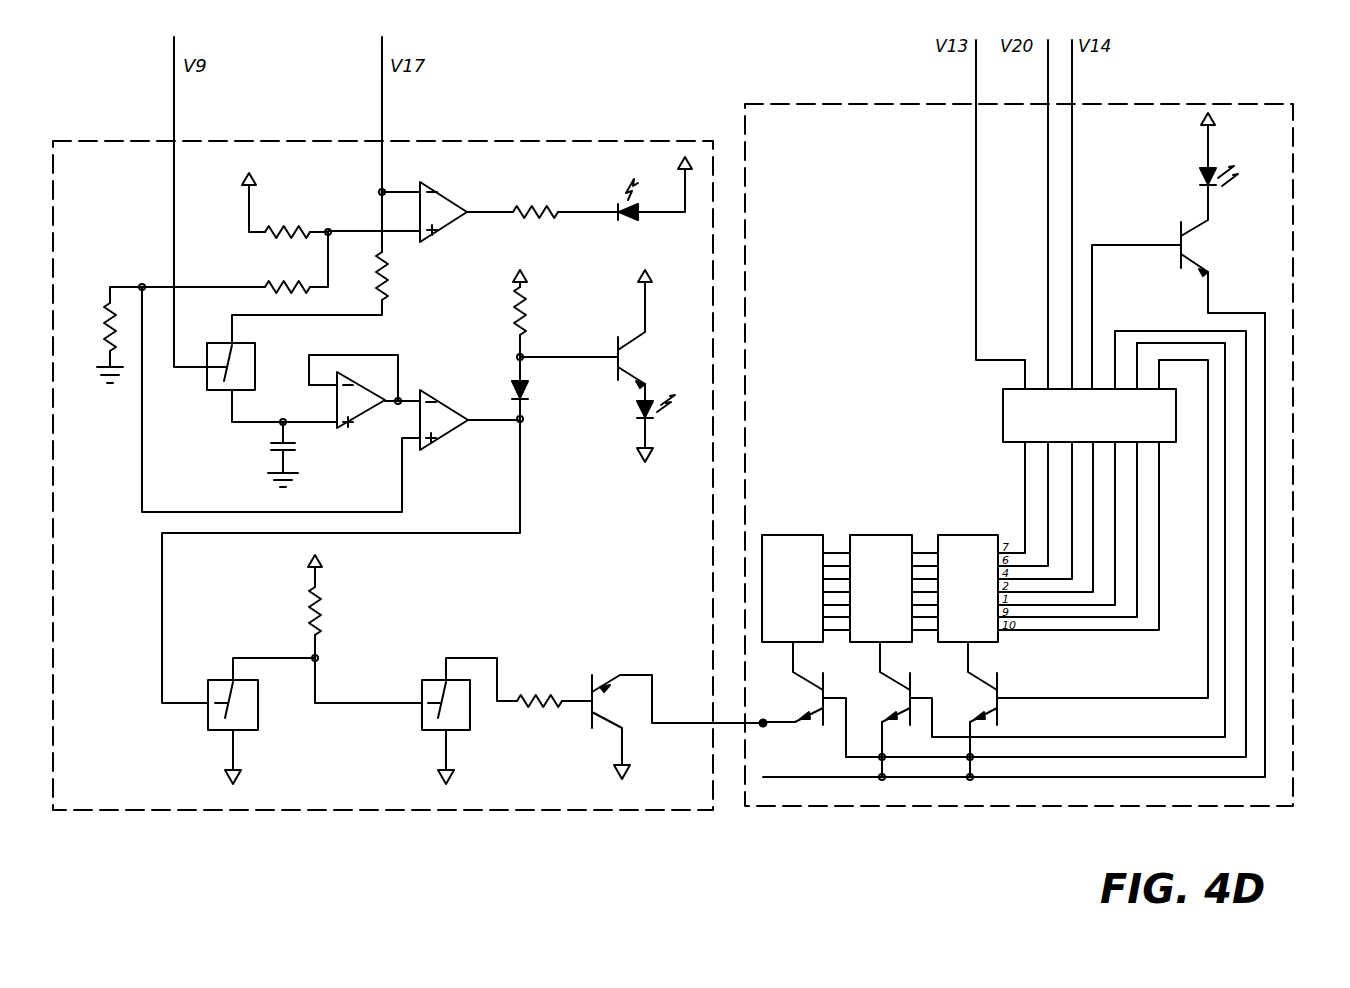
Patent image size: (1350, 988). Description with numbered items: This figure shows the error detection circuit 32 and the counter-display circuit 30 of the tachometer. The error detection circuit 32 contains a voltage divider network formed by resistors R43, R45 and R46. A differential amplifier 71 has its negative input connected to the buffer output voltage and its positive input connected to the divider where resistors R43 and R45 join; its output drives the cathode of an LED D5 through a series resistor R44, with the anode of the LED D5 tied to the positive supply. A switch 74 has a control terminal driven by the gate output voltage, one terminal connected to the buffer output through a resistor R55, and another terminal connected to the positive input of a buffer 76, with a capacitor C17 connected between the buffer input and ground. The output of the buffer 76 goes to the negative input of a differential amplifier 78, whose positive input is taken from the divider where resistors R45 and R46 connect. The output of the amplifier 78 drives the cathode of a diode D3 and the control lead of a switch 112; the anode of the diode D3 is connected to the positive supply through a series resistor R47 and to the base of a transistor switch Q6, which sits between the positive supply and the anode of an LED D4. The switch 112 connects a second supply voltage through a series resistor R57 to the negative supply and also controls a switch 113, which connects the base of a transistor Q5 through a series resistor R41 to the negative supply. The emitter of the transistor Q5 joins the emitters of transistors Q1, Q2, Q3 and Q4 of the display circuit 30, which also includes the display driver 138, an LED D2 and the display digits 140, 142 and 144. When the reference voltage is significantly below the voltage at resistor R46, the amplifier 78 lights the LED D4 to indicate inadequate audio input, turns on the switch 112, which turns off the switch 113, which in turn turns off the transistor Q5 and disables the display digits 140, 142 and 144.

The error detection circuit 32 is at (521, 141).
The counter-display circuit 30 is at (1295, 646).
The differential amplifier 71 is at (443, 188).
The switch 74 is at (214, 393).
The buffer 76 is at (357, 429).
The differential amplifier 78 is at (466, 379).
The switch 112 is at (258, 712).
The switch 113 is at (422, 734).
The display driver 138 is at (1003, 411).
The display digit 140 is at (780, 535).
The display digit 142 is at (867, 535).
The display digit 144 is at (954, 535).
The resistor R43 is at (302, 208).
The series resistor R44 is at (560, 201).
The resistor R45 is at (300, 264).
The resistor R46 is at (97, 324).
The series resistor R47 is at (514, 343).
The resistor R55 is at (389, 277).
The series resistor R57 is at (308, 616).
The series resistor R41 is at (558, 695).
The capacitor C17 is at (268, 456).
The LED D2 is at (1194, 182).
The diode D3 is at (528, 392).
The LED D4 is at (636, 414).
The LED D5 is at (630, 225).
The transistor Q1 is at (1178, 287).
The transistor Q2 is at (804, 699).
The transistor Q3 is at (894, 711).
The transistor Q4 is at (970, 711).
The transistor Q5 is at (679, 727).
The transistor switch Q6 is at (646, 323).